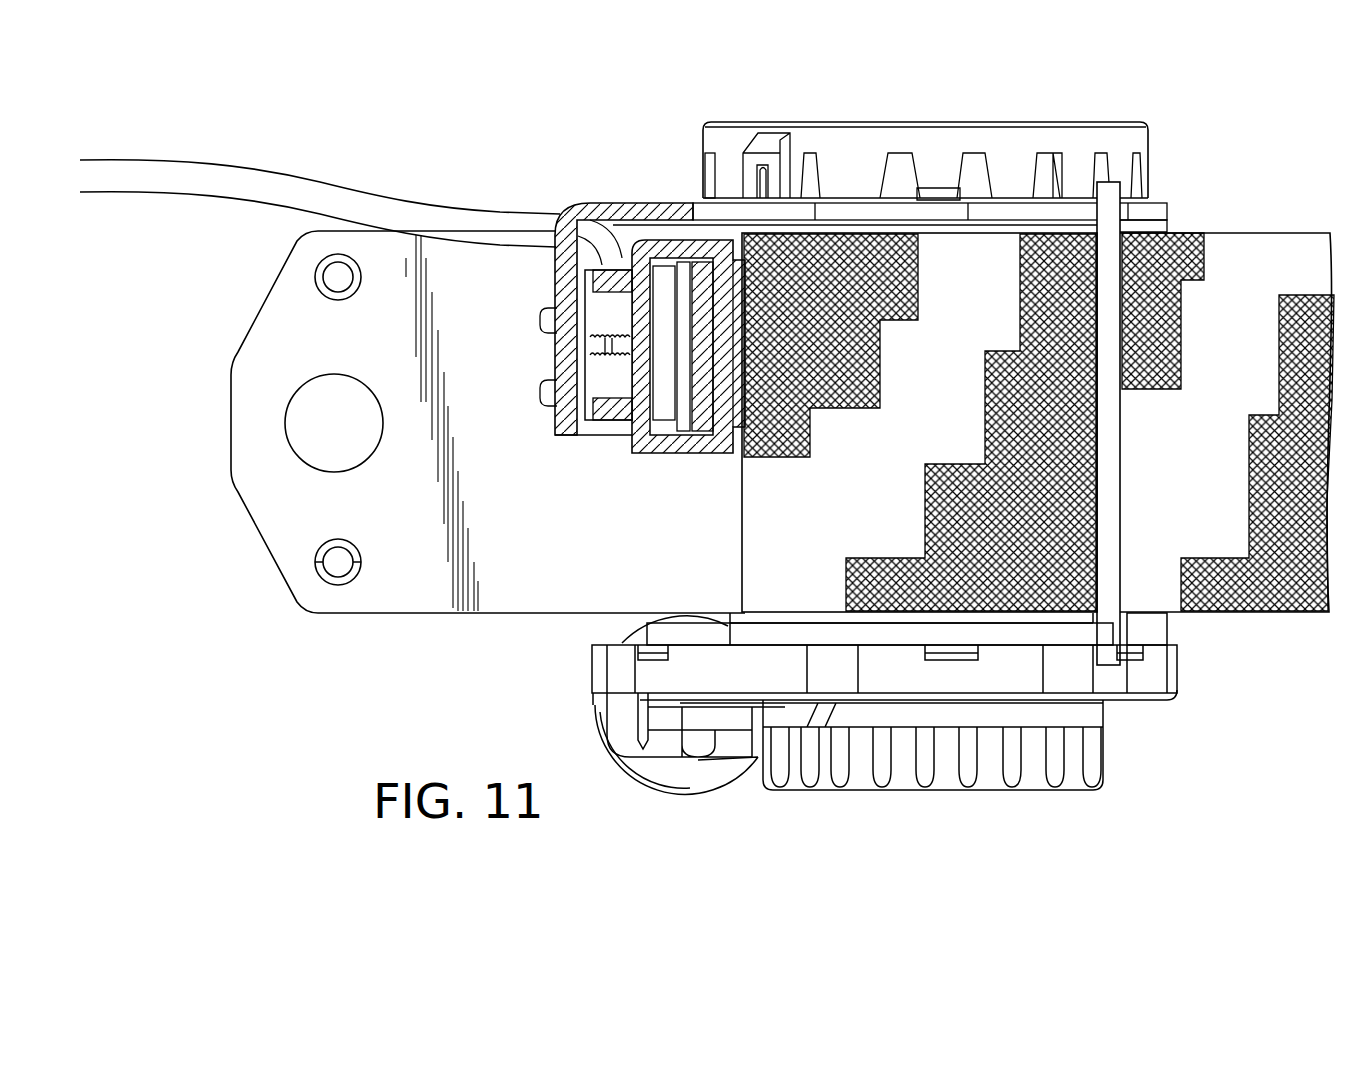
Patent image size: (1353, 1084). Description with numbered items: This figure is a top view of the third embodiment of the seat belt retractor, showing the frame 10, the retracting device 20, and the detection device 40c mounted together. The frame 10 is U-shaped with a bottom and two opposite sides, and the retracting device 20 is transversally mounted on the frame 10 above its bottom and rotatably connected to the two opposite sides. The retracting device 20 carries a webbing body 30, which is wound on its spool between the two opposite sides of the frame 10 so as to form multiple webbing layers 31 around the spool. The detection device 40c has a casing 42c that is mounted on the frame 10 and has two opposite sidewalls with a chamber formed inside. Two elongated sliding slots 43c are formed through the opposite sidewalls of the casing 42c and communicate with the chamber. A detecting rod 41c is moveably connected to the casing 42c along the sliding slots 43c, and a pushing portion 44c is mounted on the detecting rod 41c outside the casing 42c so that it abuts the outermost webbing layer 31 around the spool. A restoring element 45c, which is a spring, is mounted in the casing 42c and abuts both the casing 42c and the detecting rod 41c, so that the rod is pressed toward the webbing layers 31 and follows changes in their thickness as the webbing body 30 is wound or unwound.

The frame 10 is at (635, 212).
The retracting device 20 is at (963, 110).
The webbing body 30 is at (1185, 223).
The webbing layers 31 is at (1042, 265).
The detection device 40c is at (583, 440).
The detecting rod 41c is at (722, 462).
The casing 42c is at (600, 425).
The sliding slots 43c is at (662, 423).
The pushing portion 44c is at (740, 322).
The restoring element 45c is at (598, 350).